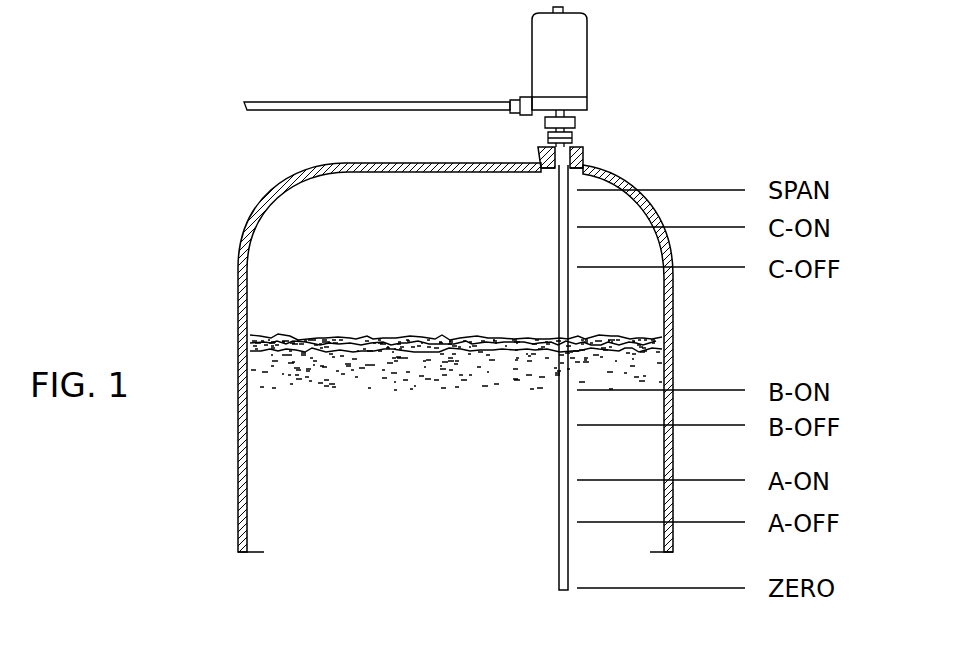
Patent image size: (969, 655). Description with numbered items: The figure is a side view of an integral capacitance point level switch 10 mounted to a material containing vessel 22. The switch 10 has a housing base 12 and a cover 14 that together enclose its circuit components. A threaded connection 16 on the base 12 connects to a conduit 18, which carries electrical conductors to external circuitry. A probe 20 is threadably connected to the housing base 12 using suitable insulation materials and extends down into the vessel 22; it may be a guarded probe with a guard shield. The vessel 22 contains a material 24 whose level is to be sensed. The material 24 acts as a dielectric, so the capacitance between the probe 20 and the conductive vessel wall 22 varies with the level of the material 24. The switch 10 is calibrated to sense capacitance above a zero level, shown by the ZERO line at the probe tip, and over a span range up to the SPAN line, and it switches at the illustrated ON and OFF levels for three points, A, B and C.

The integral capacitance point level switch 10 is at (660, 80).
The housing base 12 is at (578, 105).
The cover 14 is at (575, 60).
The threaded connection 16 is at (525, 115).
The conduit 18 is at (403, 103).
The probe 20 is at (558, 253).
The vessel 22 is at (665, 335).
The material 24 is at (430, 427).